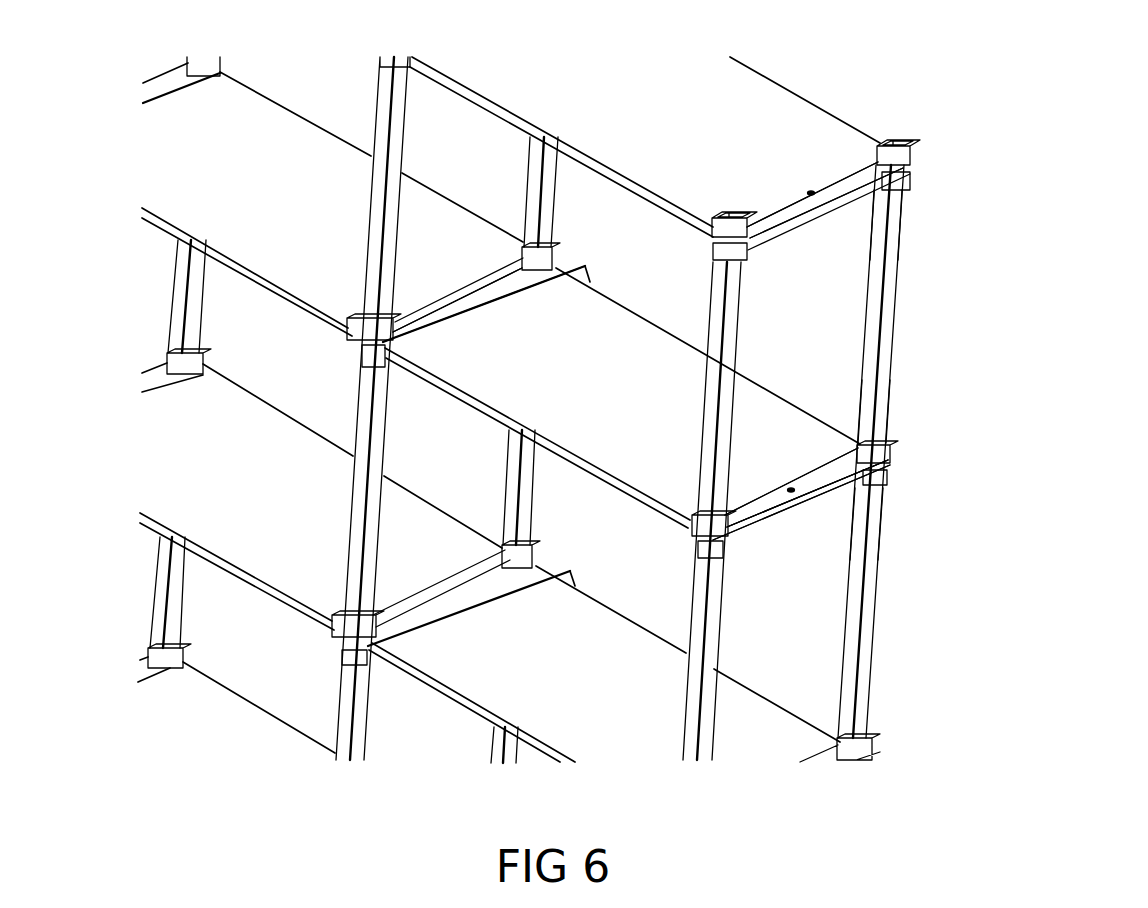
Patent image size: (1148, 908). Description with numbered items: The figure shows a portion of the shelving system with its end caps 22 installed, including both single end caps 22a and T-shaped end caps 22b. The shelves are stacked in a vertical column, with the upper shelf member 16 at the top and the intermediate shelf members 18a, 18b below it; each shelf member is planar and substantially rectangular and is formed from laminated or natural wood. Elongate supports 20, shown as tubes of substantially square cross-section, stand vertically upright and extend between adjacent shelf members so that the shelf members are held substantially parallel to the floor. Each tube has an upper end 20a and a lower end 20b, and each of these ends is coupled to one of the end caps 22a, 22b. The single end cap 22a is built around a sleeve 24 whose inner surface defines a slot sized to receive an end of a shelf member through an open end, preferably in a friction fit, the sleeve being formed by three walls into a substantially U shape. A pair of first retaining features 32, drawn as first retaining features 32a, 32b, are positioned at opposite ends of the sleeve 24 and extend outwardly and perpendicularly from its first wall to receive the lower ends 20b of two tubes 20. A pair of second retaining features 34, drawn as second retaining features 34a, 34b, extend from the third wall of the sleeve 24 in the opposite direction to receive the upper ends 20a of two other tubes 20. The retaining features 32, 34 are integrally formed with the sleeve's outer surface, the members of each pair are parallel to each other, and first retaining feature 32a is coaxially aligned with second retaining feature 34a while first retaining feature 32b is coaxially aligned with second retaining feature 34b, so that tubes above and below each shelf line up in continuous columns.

The upper shelf member 16 is at (718, 115).
The intermediate shelf member 18a is at (612, 345).
The intermediate shelf member 18b is at (577, 643).
The elongate support 20 is at (892, 290).
The upper end 20a is at (902, 193).
The lower end 20b is at (880, 435).
The end cap 22 is at (838, 180).
The single end cap 22a is at (785, 197).
The T-shaped end cap 22b is at (477, 303).
The sleeve 24 is at (775, 518).
The first retaining feature 32 is at (887, 458).
The first retaining feature 32a is at (908, 157).
The first retaining feature 32b is at (748, 232).
The second retaining feature 34 is at (885, 478).
The second retaining feature 34a is at (909, 178).
The second retaining feature 34b is at (745, 253).